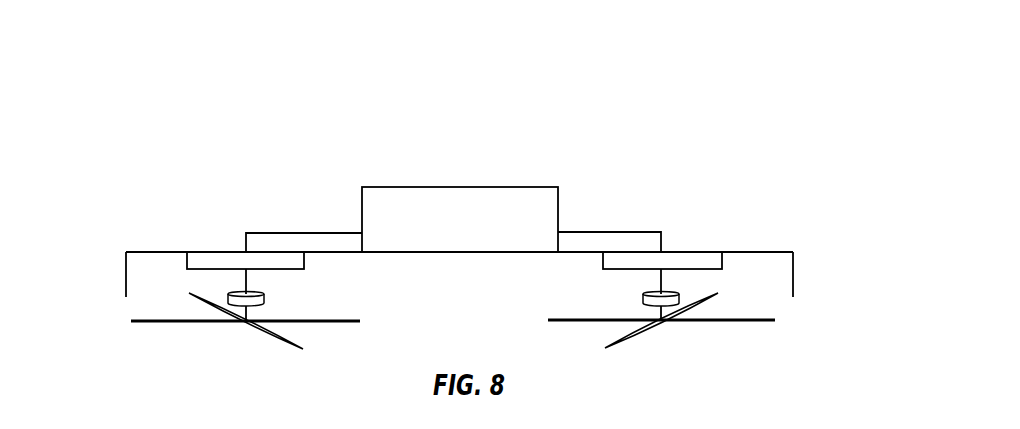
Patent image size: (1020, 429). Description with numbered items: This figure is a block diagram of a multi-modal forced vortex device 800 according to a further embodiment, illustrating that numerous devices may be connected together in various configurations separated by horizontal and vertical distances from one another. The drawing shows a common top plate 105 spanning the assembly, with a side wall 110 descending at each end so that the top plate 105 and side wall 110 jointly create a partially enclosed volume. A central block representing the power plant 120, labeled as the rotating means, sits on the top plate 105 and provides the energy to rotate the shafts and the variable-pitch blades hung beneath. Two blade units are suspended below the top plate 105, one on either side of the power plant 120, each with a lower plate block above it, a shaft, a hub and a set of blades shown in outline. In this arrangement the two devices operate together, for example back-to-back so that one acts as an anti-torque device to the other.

The vortex device 800 is at (621, 97).
The top plate 105 is at (777, 251).
The side wall 110 is at (125, 267).
The power plant 120 is at (525, 186).